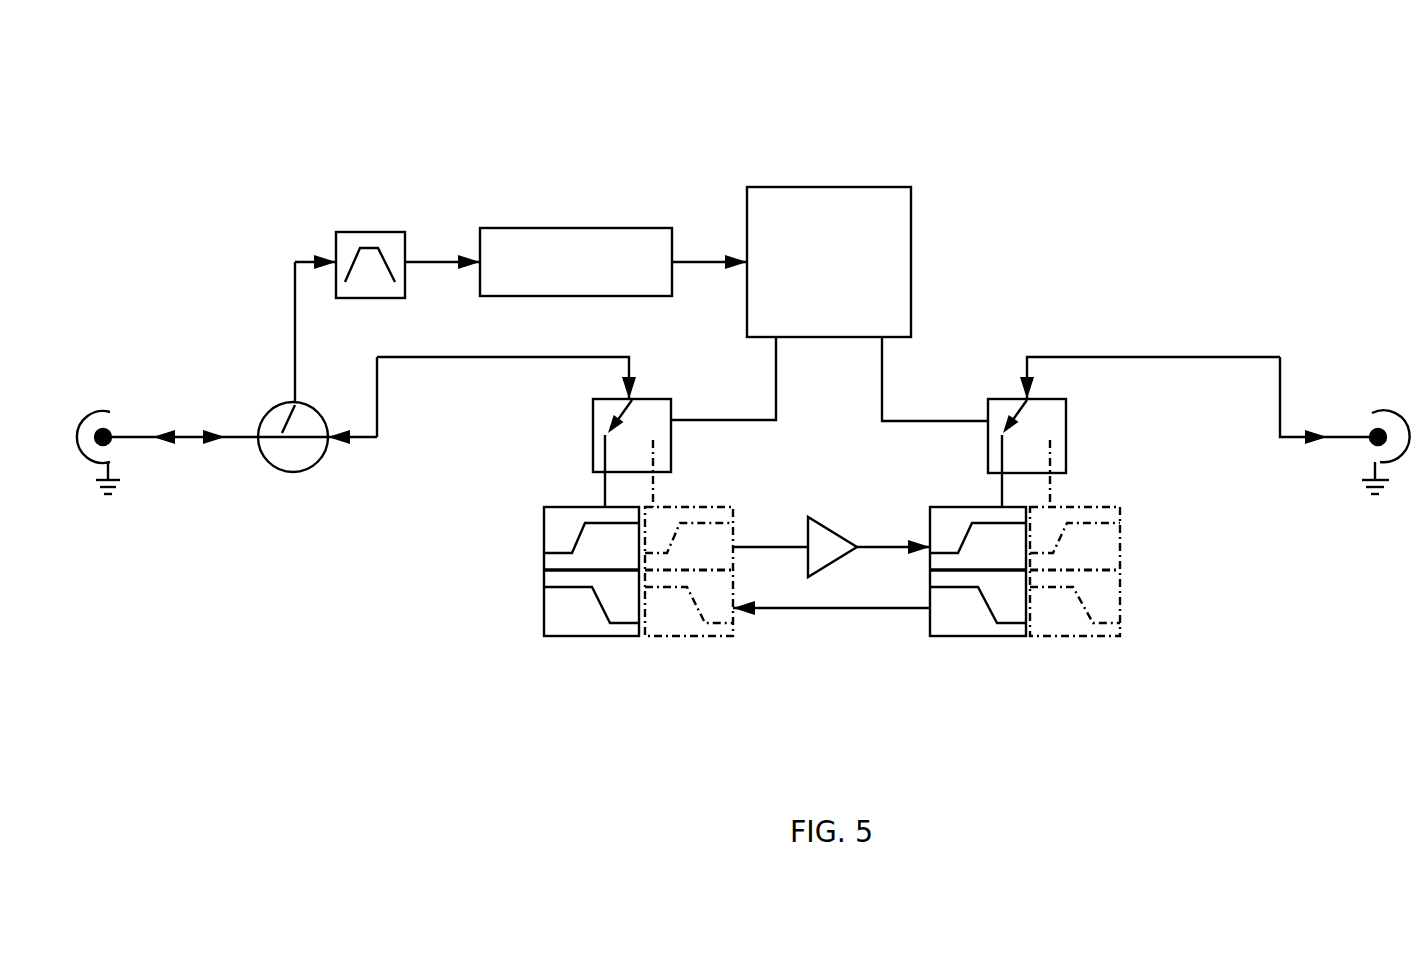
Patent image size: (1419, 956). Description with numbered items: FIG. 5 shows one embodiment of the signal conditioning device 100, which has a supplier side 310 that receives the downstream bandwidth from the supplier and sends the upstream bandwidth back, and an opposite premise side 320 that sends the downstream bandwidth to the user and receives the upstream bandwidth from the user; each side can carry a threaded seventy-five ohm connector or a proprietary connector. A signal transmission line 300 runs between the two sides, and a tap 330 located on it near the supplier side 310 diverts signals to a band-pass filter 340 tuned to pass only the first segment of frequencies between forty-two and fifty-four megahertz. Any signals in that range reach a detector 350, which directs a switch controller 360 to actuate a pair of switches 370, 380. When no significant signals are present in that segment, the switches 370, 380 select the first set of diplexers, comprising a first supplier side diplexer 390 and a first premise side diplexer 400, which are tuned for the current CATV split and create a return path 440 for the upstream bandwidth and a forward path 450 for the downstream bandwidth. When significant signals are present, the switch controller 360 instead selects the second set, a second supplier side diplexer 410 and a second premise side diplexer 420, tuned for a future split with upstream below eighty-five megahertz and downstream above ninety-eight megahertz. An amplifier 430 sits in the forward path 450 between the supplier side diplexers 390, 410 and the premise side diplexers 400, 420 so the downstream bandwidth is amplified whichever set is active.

The signal conditioning device 100 is at (1000, 121).
The signal transmission line 300 is at (187, 437).
The supplier side 310 is at (110, 410).
The premise side 320 is at (1372, 413).
The tap 330 is at (278, 402).
The band-pass filter 340 is at (368, 230).
The detector 350 is at (557, 227).
The switch controller 360 is at (823, 185).
The switch 370 is at (593, 427).
The switch 380 is at (998, 398).
The first supplier side diplexer 390 is at (588, 637).
The first premise side diplexer 400 is at (973, 637).
The second supplier side diplexer 410 is at (677, 637).
The second premise side diplexer 420 is at (1077, 637).
The amplifier 430 is at (830, 527).
The return path 440 is at (830, 610).
The forward path 450 is at (760, 545).